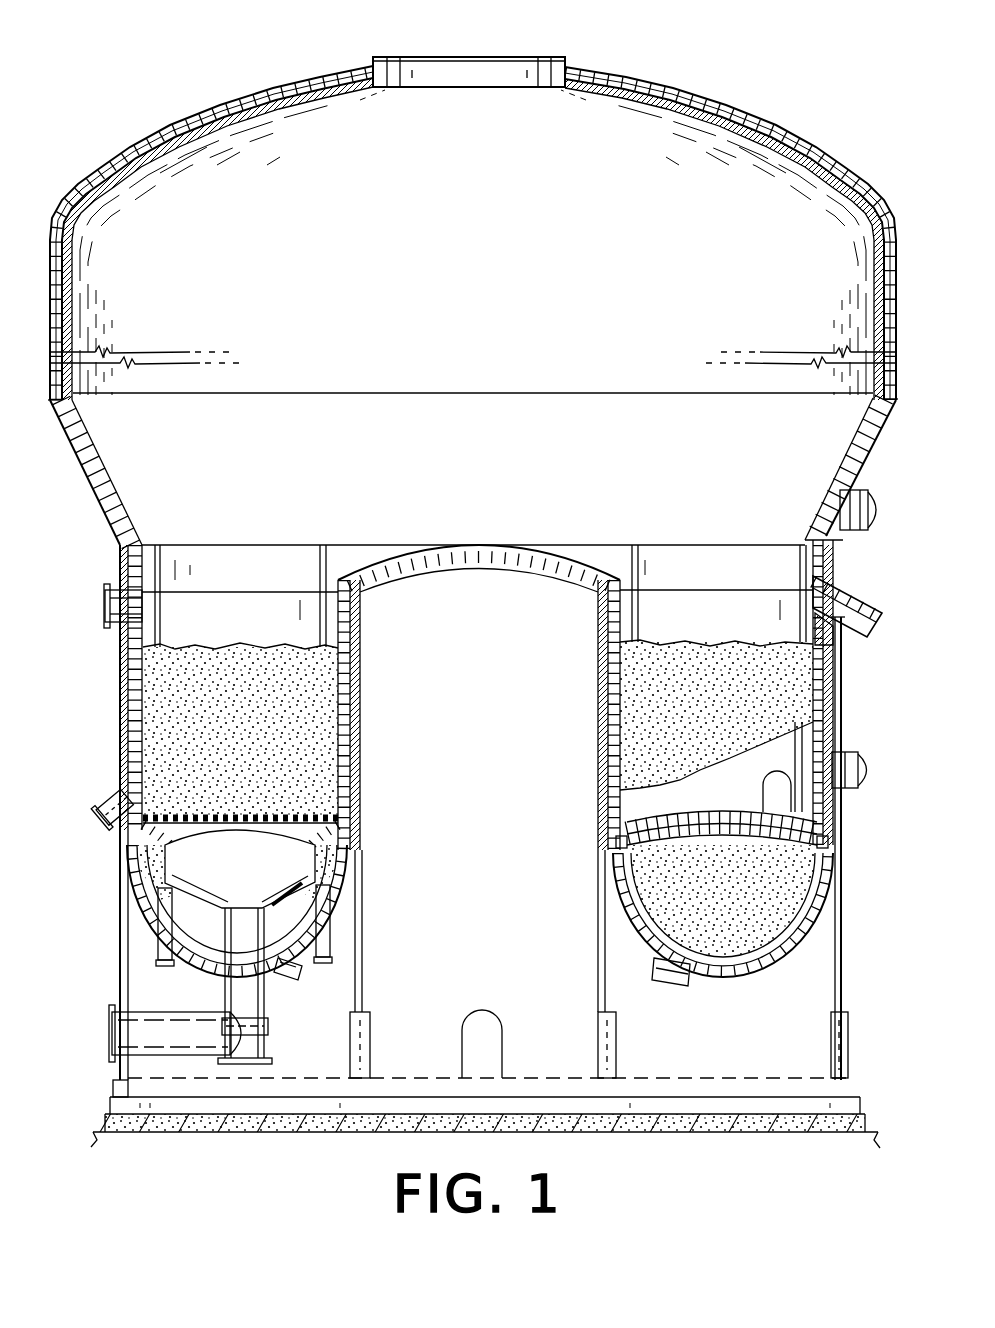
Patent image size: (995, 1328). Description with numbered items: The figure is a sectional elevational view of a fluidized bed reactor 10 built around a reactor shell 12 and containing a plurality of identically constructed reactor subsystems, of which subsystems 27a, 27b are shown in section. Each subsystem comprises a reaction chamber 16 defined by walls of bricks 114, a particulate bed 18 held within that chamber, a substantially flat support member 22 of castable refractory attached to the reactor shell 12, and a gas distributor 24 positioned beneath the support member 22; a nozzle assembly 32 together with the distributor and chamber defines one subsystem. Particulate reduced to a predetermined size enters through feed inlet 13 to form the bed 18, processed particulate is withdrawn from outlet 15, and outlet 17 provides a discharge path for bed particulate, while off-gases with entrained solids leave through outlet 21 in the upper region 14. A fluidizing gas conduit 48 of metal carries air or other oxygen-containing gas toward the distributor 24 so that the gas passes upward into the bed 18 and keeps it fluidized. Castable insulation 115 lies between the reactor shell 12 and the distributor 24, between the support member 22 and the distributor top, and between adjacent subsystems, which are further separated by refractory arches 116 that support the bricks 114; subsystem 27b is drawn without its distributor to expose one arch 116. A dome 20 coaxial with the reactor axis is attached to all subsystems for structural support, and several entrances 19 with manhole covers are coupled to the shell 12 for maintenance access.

The fluidized bed reactor 10 is at (165, 93).
The reactor shell 12 is at (345, 75).
The feed inlet 13 is at (105, 605).
The upper chamber 14 is at (448, 253).
The outlet 15 is at (860, 628).
The reaction chamber 16 is at (293, 585).
The outlet 17 is at (100, 825).
The particulate bed 18 is at (214, 745).
The entrance 19 is at (868, 505).
The dome 20 is at (538, 552).
The outlet 21 is at (500, 60).
The support member 22 is at (350, 820).
The gas distributor 24 is at (170, 895).
The reactor subsystem 27a is at (122, 960).
The reactor subsystem 27b is at (842, 975).
The nozzle assembly 32 is at (240, 932).
The fluidizing gas conduit 48 is at (205, 1025).
The bricks 114 is at (238, 605).
The castable insulation 115 is at (395, 575).
The arch 116 is at (610, 824).